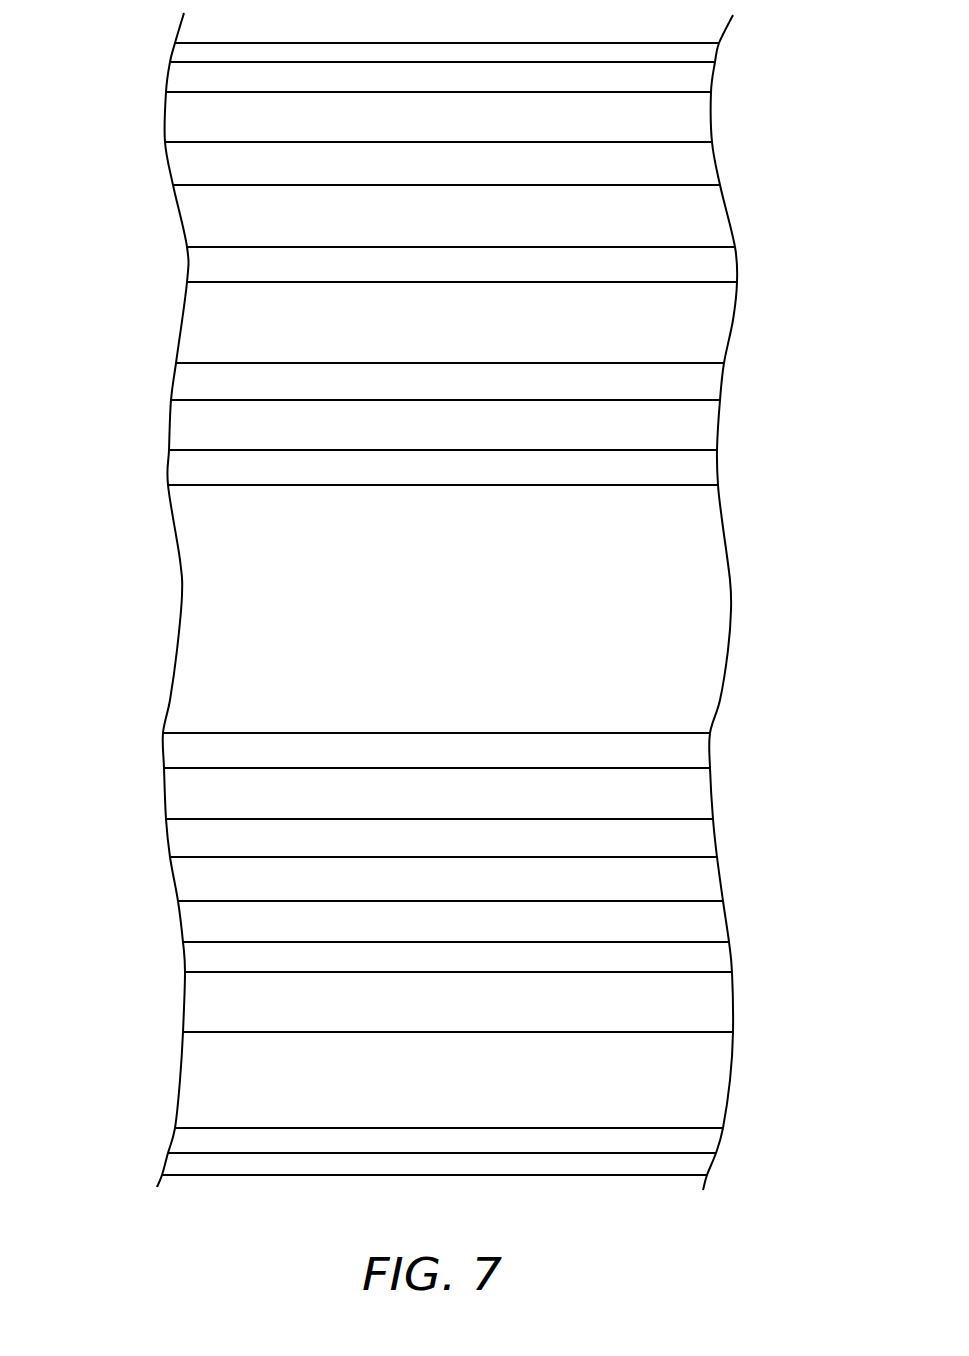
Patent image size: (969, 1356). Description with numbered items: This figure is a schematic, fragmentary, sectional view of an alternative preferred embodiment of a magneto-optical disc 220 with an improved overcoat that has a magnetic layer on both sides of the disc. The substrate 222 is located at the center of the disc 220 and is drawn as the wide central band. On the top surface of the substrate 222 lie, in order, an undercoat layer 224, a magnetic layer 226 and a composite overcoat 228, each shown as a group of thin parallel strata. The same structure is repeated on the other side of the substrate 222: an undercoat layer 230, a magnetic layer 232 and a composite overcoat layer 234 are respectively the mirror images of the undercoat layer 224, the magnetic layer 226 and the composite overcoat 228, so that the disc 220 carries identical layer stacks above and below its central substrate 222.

The magneto-optical disc 220 is at (745, 631).
The substrate 222 is at (182, 595).
The undercoat layer 224 is at (168, 363).
The magnetic layer 226 is at (170, 185).
The composite overcoat 228 is at (172, 43).
The undercoat layer 230 is at (160, 733).
The magnetic layer 232 is at (178, 1032).
The composite overcoat layer 234 is at (180, 1032).